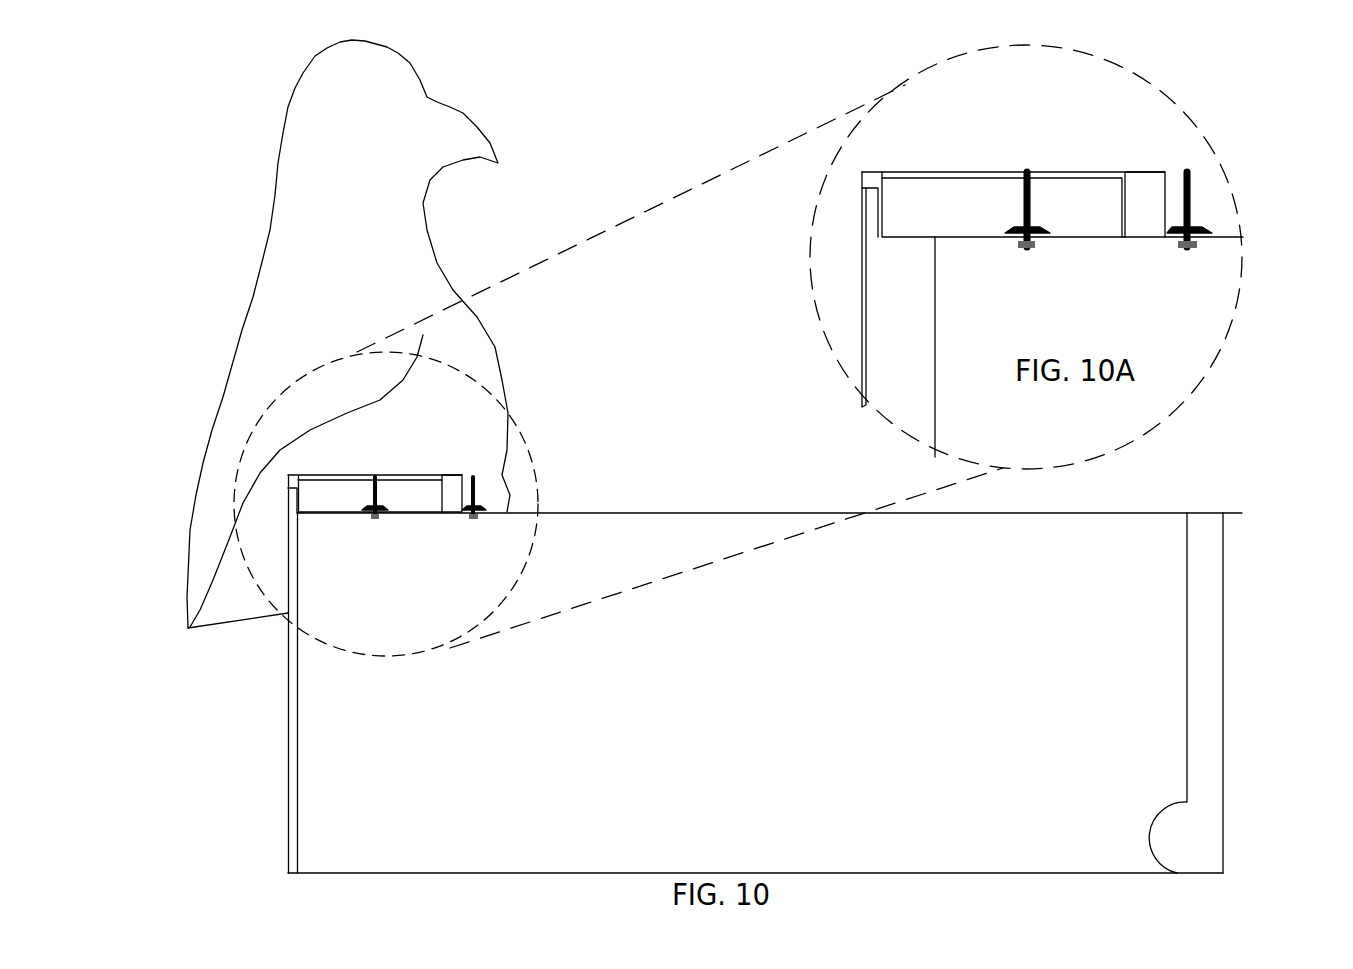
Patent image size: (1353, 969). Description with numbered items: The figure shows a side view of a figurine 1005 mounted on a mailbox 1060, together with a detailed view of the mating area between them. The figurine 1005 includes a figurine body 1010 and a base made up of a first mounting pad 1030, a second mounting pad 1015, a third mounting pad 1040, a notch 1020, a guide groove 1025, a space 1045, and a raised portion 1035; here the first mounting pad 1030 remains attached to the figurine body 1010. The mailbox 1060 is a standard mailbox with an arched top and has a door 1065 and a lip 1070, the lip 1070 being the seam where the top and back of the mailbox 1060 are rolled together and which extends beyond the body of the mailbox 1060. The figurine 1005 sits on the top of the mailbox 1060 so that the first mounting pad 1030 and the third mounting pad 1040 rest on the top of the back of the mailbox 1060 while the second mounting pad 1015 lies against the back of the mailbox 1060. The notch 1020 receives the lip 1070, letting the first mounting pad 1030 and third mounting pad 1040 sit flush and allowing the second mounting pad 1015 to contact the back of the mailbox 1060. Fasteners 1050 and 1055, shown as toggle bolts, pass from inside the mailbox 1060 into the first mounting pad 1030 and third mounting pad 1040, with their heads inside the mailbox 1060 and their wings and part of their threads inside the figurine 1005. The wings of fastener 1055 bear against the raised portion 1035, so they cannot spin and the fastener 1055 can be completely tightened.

In FIG. 10, the figurine 1005 is at (319, 334).
In FIG. 10, the figurine body 1010 is at (267, 257).
In FIG. 10, the second mounting pad 1015 is at (288, 585).
In FIG. 10A, the second mounting pad 1015 is at (862, 343).
In FIG. 10, the notch 1020 is at (298, 477).
In FIG. 10A, the notch 1020 is at (872, 175).
In FIG. 10, the guide groove 1025 is at (397, 482).
In FIG. 10, the first mounting pad 1030 is at (410, 507).
In FIG. 10A, the first mounting pad 1030 is at (1068, 215).
In FIG. 10, the raised portion 1035 is at (450, 473).
In FIG. 10A, the raised portion 1035 is at (1143, 172).
In FIG. 10, the third mounting pad 1040 is at (495, 508).
In FIG. 10A, the third mounting pad 1040 is at (1212, 230).
In FIG. 10, the space 1045 is at (450, 502).
In FIG. 10A, the space 1045 is at (1147, 218).
In FIG. 10, the fastener 1050 is at (377, 519).
In FIG. 10A, the fastener 1050 is at (1023, 249).
In FIG. 10, the fastener 1055 is at (478, 518).
In FIG. 10A, the fastener 1055 is at (1196, 246).
In FIG. 10, the mailbox 1060 is at (783, 872).
In FIG. 10, the door 1065 is at (1197, 720).
In FIG. 10, the lip 1070 is at (296, 500).
In FIG. 10A, the lip 1070 is at (872, 210).